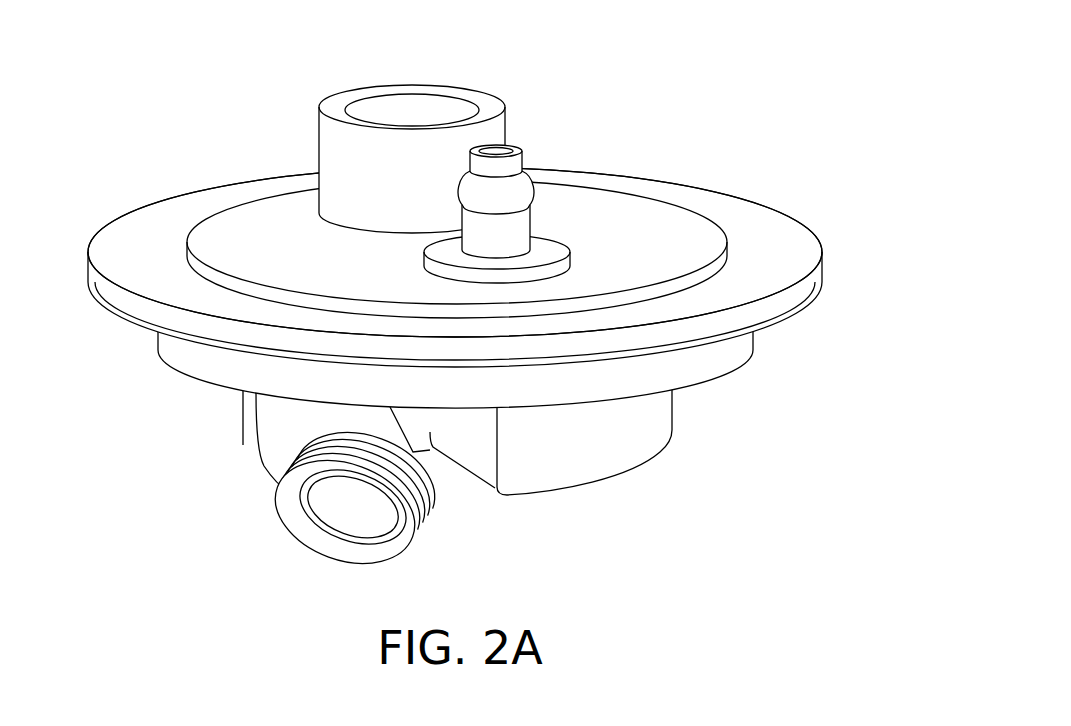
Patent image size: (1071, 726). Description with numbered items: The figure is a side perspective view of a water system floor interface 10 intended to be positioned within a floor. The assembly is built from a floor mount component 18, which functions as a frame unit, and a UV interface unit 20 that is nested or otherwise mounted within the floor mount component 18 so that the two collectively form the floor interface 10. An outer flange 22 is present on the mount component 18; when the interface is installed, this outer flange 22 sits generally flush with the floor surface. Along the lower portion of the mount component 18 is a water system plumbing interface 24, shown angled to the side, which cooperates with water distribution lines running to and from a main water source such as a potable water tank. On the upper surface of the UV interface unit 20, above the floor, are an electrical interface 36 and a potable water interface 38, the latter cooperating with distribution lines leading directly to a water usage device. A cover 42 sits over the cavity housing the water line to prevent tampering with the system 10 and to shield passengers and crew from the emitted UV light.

The water system floor interface 10 is at (483, 295).
The floor mount component 18 is at (481, 456).
The UV interface unit 20 is at (658, 227).
The outer flange 22 is at (797, 258).
The water system plumbing interface 24 is at (283, 445).
The electrical interface 36 is at (330, 152).
The potable water interface 38 is at (512, 197).
The cover 42 is at (232, 233).